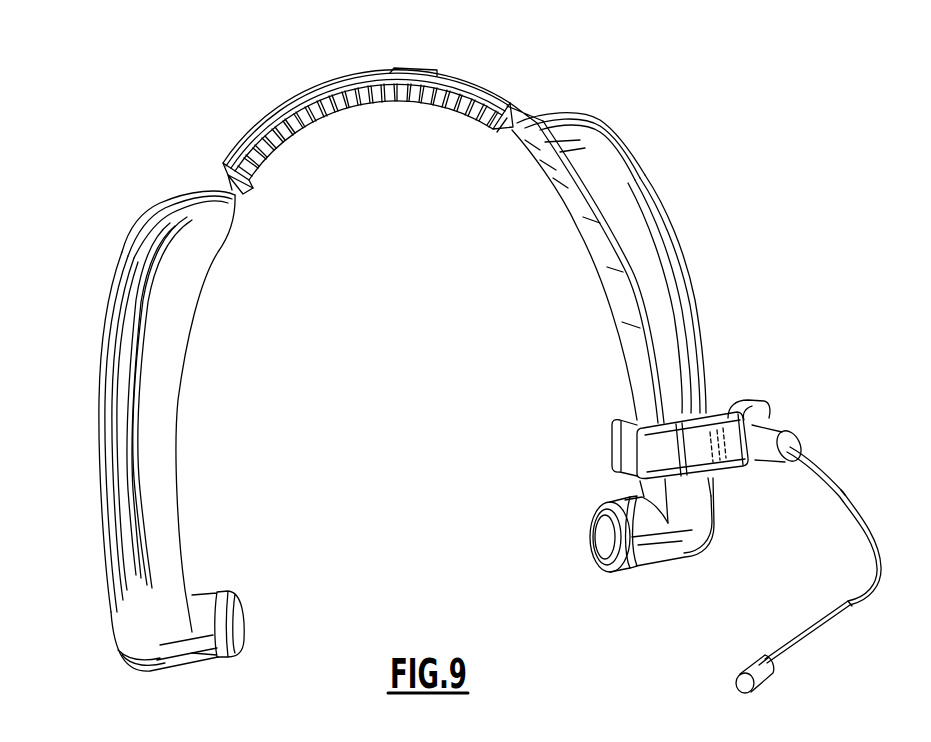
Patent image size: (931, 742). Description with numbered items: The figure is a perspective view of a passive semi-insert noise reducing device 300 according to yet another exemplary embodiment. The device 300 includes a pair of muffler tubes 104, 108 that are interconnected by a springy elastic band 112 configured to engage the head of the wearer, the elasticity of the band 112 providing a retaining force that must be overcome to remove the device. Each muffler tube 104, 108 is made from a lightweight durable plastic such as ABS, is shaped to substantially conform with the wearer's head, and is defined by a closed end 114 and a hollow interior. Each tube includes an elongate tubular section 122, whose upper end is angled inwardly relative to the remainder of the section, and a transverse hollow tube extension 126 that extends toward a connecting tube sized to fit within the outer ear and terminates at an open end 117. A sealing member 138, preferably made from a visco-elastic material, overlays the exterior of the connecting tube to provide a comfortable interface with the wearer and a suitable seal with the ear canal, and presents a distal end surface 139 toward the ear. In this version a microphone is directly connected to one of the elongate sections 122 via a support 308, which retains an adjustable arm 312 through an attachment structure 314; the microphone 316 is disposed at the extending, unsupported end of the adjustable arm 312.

The passive semi-insert device 300 is at (151, 50).
The muffler tube 108 is at (703, 320).
The muffler tube 104 is at (100, 510).
The elastic band 112 is at (349, 84).
The closed end 114 is at (164, 204).
The elongate tubular section 122 is at (102, 340).
The support 308 is at (612, 452).
The attachment structure 314 is at (766, 412).
The adjustable arm 312 is at (877, 551).
The microphone 316 is at (763, 681).
The hollow tube extension 126 is at (670, 538).
The sealing member 138 is at (628, 562).
The distal end surface of sealing member 139 is at (593, 533).
The open end 117 is at (600, 551).